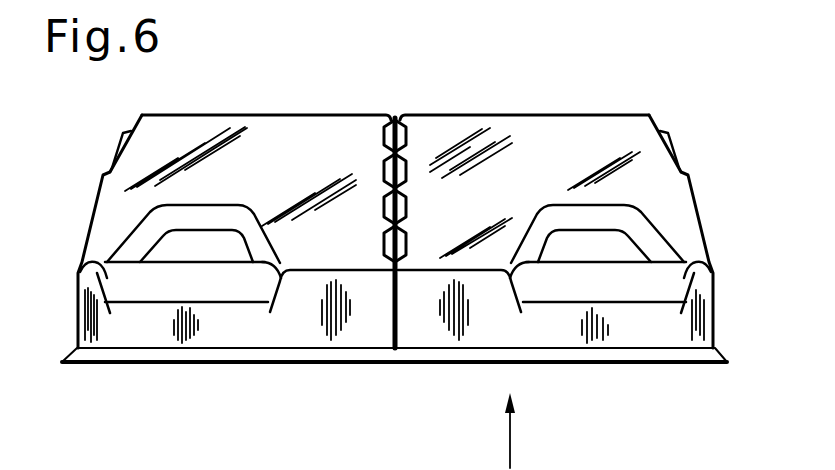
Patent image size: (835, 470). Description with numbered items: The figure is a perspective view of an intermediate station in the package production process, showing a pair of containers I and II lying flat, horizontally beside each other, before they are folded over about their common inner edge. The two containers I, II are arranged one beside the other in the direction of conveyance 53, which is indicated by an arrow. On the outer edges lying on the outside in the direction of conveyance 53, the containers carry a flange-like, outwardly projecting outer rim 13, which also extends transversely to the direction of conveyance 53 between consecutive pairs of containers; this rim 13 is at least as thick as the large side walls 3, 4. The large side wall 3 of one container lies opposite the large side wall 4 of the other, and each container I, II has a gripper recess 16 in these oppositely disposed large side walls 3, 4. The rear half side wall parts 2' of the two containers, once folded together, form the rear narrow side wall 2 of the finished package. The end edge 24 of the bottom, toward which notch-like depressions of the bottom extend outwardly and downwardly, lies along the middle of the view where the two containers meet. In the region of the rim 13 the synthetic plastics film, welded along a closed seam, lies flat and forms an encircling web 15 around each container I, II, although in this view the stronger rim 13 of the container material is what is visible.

The rear narrow side wall 2 is at (395, 350).
The rear half side wall part 2' is at (387, 302).
The large side wall 3 is at (253, 133).
The large side wall 4 is at (528, 138).
The flange-like outer rim 13 is at (232, 347).
The encircling web 15 is at (97, 353).
The gripper recess 16 is at (150, 273).
The end edge 24 is at (393, 110).
The direction of conveyance 53 is at (512, 437).
The container I is at (150, 345).
The container II is at (630, 345).